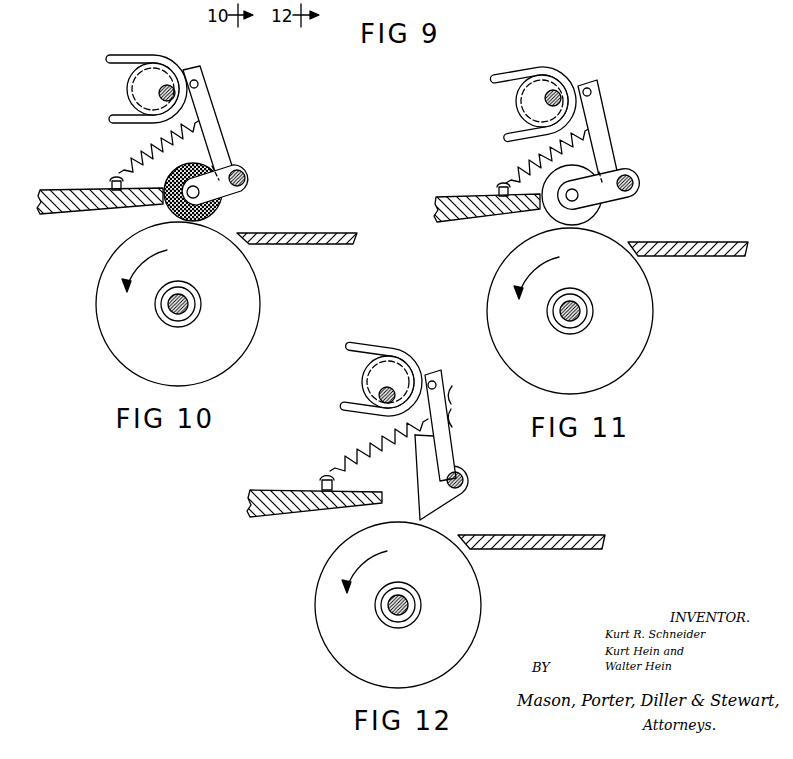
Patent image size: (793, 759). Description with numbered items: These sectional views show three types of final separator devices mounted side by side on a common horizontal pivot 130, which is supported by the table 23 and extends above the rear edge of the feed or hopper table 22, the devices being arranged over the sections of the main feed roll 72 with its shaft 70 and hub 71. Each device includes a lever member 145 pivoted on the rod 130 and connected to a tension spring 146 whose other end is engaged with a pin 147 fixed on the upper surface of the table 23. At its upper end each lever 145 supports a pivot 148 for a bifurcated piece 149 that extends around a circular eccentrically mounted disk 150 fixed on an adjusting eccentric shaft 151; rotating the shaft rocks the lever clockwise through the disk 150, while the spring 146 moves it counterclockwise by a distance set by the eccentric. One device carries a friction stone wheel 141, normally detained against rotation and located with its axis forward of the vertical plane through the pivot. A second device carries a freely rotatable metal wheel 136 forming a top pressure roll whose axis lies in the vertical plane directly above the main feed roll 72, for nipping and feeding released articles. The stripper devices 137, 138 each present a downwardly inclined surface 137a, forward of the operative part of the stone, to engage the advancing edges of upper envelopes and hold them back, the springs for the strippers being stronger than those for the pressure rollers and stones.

In FIG. 10, the feed or hopper table 22 is at (307, 245).
In FIG. 11, the feed or hopper table 22 is at (708, 253).
In FIG. 12, the feed or hopper table 22 is at (557, 547).
In FIG. 10, the table 23 is at (55, 188).
In FIG. 11, the table 23 is at (442, 197).
In FIG. 12, the table 23 is at (262, 500).
In FIG. 10, the shaft 70 is at (182, 308).
In FIG. 11, the shaft 70 is at (578, 318).
In FIG. 12, the shaft 70 is at (407, 612).
In FIG. 10, the hub 71 is at (178, 290).
In FIG. 11, the hub 71 is at (568, 290).
In FIG. 12, the hub 71 is at (403, 588).
In FIG. 10, the main feed roll 72 is at (252, 300).
In FIG. 11, the main feed roll 72 is at (643, 293).
In FIG. 12, the main feed roll 72 is at (470, 597).
In FIG. 10, the pivot 130 is at (246, 177).
In FIG. 11, the pivot 130 is at (634, 183).
In FIG. 12, the pivot 130 is at (465, 477).
In FIG. 11, the metal wheel 136 is at (563, 177).
In FIG. 12, the stripper device 137 is at (467, 395).
In FIG. 12, the downwardly inclined surface 137a is at (438, 495).
In FIG. 12, the stripper device 138 is at (467, 415).
In FIG. 10, the friction stone wheel 141 is at (206, 165).
In FIG. 10, the lever member 145 is at (210, 132).
In FIG. 11, the lever member 145 is at (602, 142).
In FIG. 12, the lever member 145 is at (440, 435).
In FIG. 10, the tension spring 146 is at (153, 140).
In FIG. 11, the tension spring 146 is at (520, 153).
In FIG. 12, the tension spring 146 is at (370, 438).
In FIG. 10, the pin 147 is at (110, 182).
In FIG. 11, the pin 147 is at (500, 190).
In FIG. 12, the pin 147 is at (318, 478).
In FIG. 10, the pivot 148 is at (197, 82).
In FIG. 11, the pivot 148 is at (590, 91).
In FIG. 12, the pivot 148 is at (435, 381).
In FIG. 10, the bifurcated piece 149 is at (142, 55).
In FIG. 11, the bifurcated piece 149 is at (517, 80).
In FIG. 12, the bifurcated piece 149 is at (370, 338).
In FIG. 10, the eccentric disk 150 is at (140, 83).
In FIG. 11, the eccentric disk 150 is at (530, 98).
In FIG. 12, the eccentric disk 150 is at (375, 375).
In FIG. 10, the adjusting eccentric shaft 151 is at (168, 88).
In FIG. 11, the adjusting eccentric shaft 151 is at (554, 93).
In FIG. 12, the adjusting eccentric shaft 151 is at (390, 390).